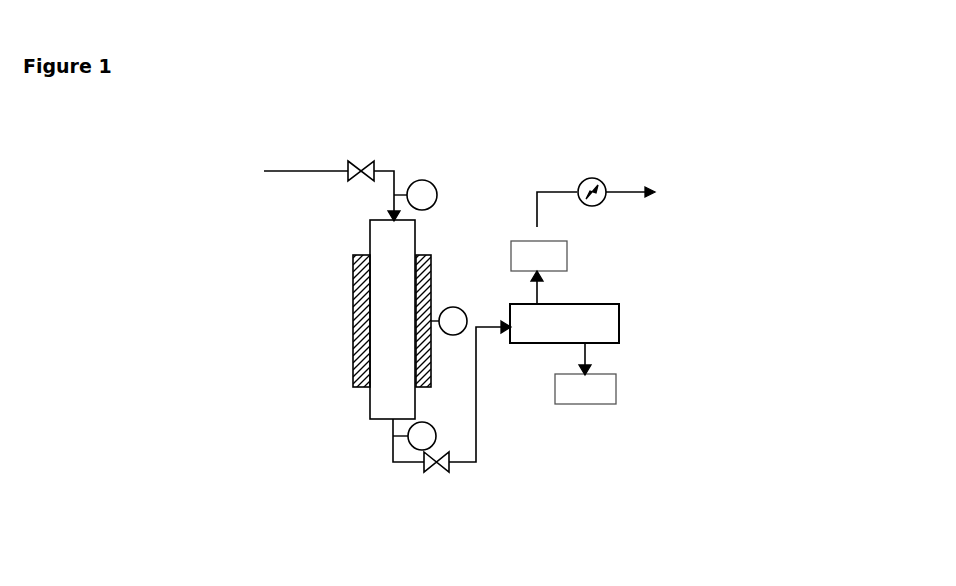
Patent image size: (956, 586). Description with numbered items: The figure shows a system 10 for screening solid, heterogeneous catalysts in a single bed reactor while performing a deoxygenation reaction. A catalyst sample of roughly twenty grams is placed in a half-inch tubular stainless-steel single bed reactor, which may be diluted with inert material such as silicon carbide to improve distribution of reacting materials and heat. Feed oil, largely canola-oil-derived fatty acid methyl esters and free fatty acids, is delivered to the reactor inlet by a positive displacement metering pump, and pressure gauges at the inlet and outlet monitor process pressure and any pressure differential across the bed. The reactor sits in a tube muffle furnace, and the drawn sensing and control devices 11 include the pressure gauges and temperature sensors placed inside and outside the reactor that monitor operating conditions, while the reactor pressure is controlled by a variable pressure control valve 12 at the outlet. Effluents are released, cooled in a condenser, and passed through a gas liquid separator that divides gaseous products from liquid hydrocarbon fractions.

The catalyst testing system 10 is at (662, 153).
The sensors and control devices 11 is at (376, 148).
The outlet control valve 12 is at (440, 483).